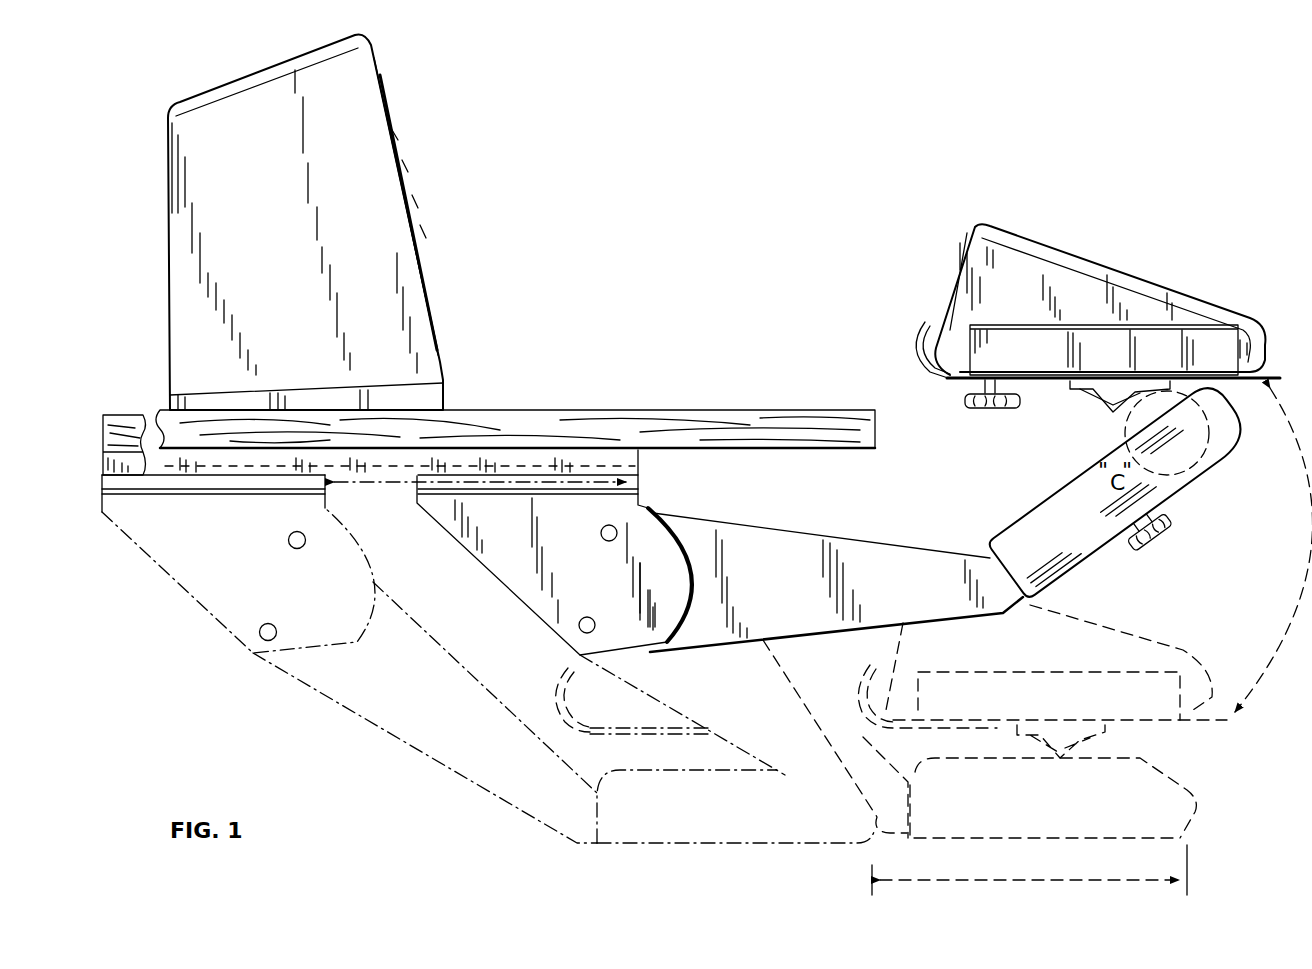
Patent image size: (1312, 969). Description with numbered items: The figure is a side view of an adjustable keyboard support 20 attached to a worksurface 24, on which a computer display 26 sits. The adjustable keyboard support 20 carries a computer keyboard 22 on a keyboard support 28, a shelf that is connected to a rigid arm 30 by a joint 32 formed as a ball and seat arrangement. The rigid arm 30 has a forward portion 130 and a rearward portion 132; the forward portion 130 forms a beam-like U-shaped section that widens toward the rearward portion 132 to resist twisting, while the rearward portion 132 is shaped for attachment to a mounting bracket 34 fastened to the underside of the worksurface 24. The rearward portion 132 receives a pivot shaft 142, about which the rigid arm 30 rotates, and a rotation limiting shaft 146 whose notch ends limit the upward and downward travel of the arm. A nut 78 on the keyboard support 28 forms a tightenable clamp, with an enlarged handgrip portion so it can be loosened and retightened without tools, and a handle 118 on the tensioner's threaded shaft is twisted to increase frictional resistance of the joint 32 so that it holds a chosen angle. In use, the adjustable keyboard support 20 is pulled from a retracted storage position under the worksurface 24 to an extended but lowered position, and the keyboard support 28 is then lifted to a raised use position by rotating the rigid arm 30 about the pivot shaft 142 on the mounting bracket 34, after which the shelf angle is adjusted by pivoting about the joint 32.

The adjustable keyboard support 20 is at (490, 822).
The computer keyboard 22 is at (1193, 298).
The worksurface 24 is at (610, 410).
The computer display 26 is at (285, 314).
The keyboard support 28 is at (925, 372).
The rigid arm 30 is at (831, 581).
The joint 32 is at (1118, 412).
The mounting bracket 34 is at (592, 592).
The nut 78 is at (975, 410).
The handle 118 is at (1160, 540).
The forward portion 130 is at (1075, 544).
The rearward portion 132 is at (910, 592).
The pivot shaft 142 is at (619, 528).
The rotation limiting shaft 146 is at (578, 627).